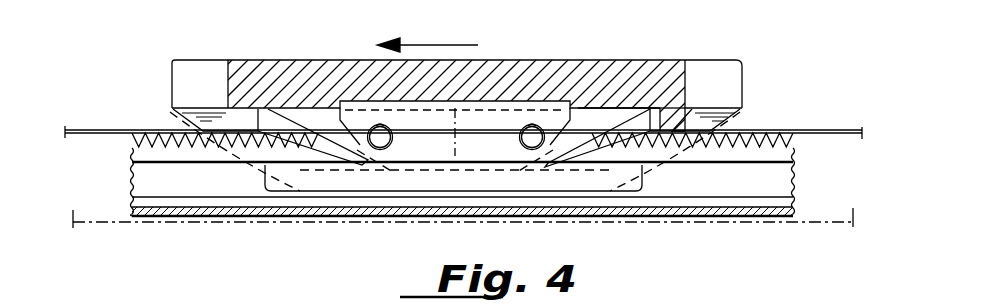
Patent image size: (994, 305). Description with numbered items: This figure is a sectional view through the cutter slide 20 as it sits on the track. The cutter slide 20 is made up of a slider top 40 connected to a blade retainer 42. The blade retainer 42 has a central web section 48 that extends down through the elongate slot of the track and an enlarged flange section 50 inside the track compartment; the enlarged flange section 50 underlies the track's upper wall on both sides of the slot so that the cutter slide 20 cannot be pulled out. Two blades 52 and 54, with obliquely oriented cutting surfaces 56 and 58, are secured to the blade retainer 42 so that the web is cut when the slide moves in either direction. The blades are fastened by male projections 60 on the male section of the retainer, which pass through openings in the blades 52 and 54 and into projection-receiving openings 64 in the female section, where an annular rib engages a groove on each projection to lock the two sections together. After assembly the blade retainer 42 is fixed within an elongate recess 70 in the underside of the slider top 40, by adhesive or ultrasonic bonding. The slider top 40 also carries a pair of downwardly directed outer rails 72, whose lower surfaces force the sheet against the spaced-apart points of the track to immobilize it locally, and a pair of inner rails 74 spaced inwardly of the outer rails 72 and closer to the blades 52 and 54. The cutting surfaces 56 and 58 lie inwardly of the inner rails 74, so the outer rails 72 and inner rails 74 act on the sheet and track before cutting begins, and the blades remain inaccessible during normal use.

The cutter slide 20 is at (735, 60).
The slider top 40 is at (588, 110).
The blade retainer 42 is at (275, 62).
The central web section 48 is at (505, 150).
The enlarged flange section 50 is at (613, 177).
The blade 52 is at (327, 122).
The blade 54 is at (605, 128).
The cutting surface 56 is at (274, 110).
The cutting surface 58 is at (638, 105).
The male projection 60 is at (393, 136).
The projection-receiving opening 64 is at (379, 125).
The elongate recess 70 is at (582, 110).
The outer rail 72 is at (187, 124).
The inner rail 74 is at (217, 112).